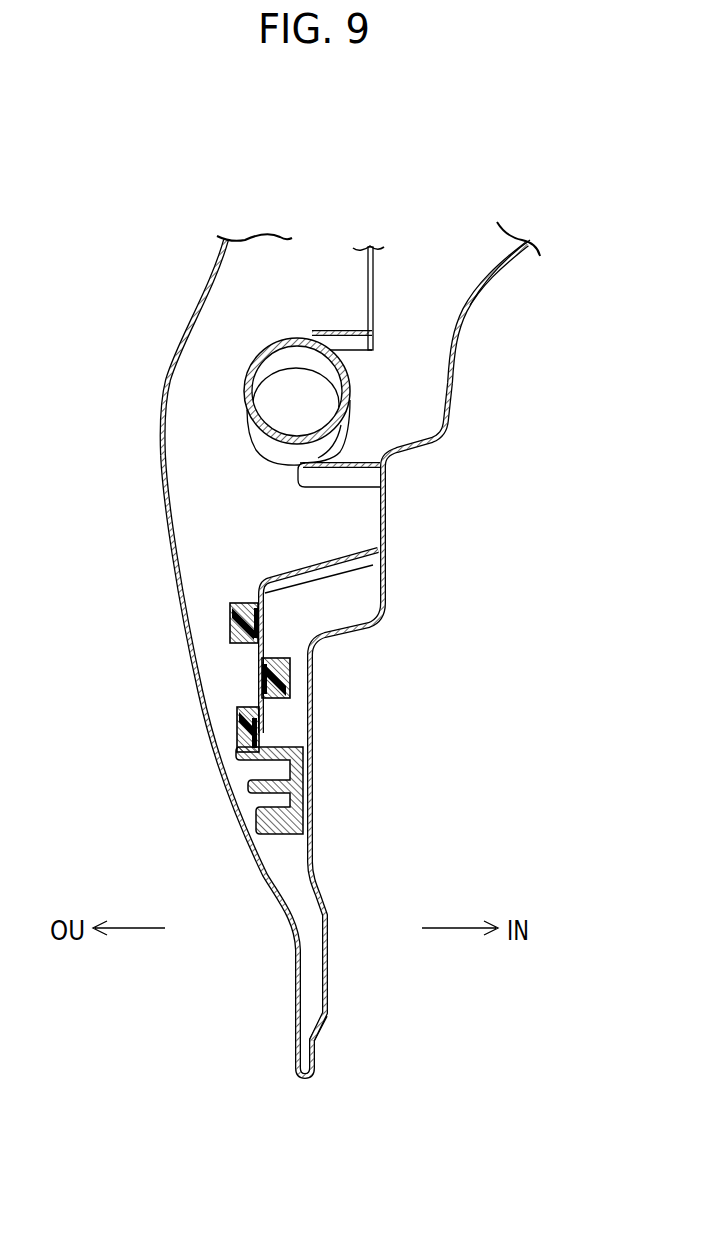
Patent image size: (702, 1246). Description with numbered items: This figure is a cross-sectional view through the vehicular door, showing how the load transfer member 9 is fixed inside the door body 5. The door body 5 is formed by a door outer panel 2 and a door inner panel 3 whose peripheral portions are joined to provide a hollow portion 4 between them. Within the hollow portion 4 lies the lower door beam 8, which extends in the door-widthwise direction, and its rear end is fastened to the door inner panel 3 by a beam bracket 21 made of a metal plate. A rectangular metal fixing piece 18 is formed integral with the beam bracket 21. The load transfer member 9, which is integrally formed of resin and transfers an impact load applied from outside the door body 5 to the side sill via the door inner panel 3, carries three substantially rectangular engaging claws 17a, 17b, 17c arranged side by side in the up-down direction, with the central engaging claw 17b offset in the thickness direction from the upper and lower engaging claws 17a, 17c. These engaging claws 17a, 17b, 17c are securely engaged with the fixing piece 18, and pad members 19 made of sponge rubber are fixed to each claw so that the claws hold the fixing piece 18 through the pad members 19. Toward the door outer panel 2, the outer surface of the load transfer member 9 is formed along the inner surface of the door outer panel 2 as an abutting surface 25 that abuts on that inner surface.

The door outer panel 2 is at (188, 330).
The door inner panel 3 is at (463, 323).
The hollow portion 4 is at (182, 464).
The door body 5 is at (452, 382).
The lower door beam 8 is at (290, 338).
The load transfer member 9 is at (287, 745).
The engaging claw 17a is at (233, 613).
The engaging claw 17b is at (288, 668).
The engaging claw 17c is at (240, 715).
The fixing piece 18 is at (268, 665).
The pad member 19 is at (257, 613).
The beam bracket 21 is at (373, 266).
The abutting surface 25 is at (247, 779).